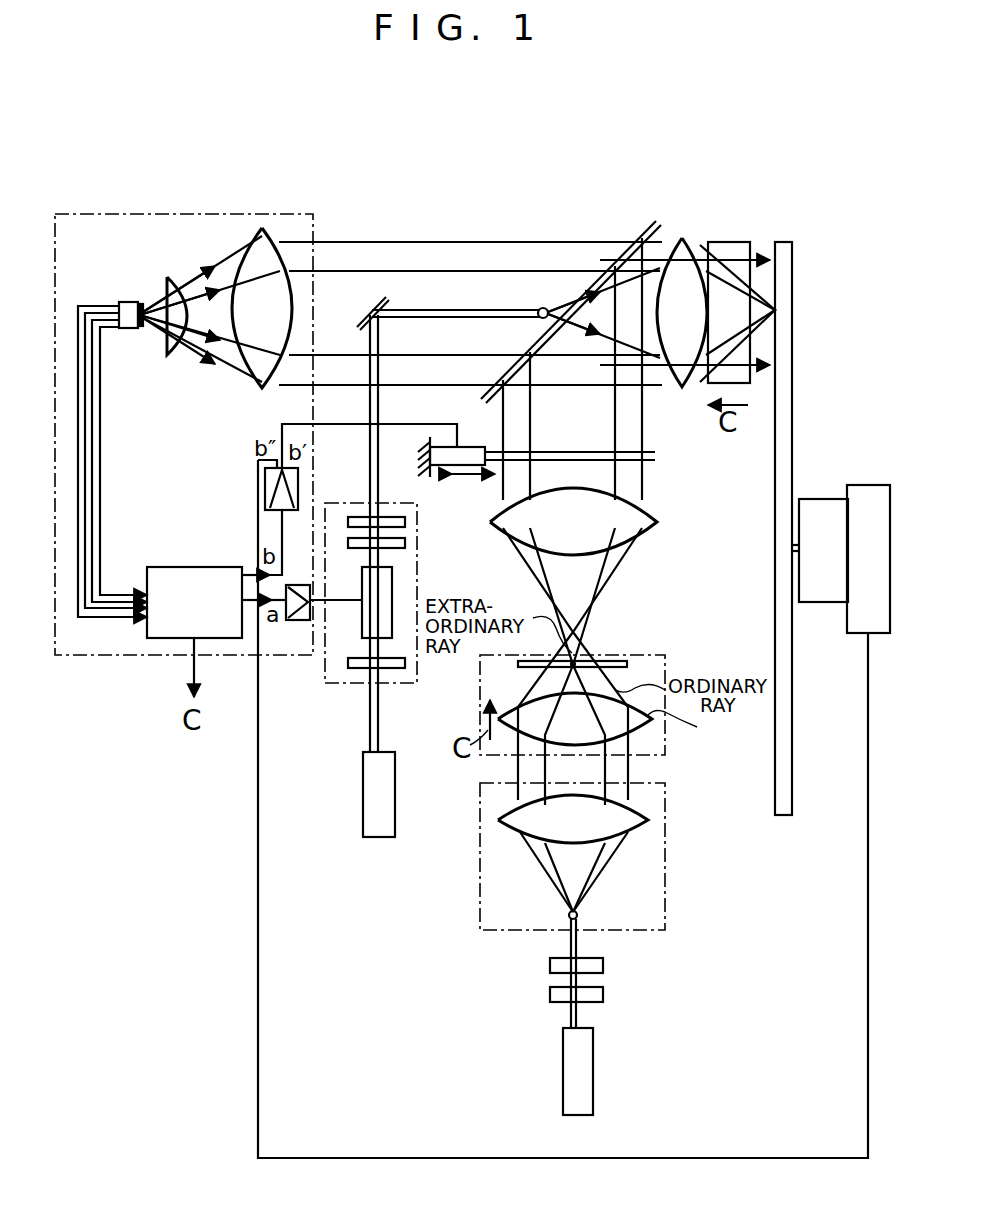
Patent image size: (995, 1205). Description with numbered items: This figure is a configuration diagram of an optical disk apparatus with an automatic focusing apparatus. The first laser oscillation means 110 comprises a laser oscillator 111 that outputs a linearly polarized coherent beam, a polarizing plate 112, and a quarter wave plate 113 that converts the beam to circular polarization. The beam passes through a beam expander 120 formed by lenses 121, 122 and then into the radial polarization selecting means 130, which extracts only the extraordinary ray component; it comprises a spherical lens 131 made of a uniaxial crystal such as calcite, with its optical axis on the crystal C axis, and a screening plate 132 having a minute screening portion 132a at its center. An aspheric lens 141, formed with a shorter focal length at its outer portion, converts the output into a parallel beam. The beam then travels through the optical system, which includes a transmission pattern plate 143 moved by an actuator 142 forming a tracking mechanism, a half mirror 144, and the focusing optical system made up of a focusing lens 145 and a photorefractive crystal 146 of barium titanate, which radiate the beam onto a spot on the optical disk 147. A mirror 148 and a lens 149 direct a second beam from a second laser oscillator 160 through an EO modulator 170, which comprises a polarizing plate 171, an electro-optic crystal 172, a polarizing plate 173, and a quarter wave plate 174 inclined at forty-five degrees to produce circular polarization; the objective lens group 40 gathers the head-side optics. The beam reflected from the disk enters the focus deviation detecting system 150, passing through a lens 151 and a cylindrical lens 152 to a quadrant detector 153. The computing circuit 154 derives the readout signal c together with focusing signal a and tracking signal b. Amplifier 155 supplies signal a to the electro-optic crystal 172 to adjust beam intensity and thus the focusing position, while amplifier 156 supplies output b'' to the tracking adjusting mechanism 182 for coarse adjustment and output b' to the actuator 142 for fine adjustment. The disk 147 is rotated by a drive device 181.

The optical head unit 40 is at (733, 461).
The first laser oscillation means 110 is at (648, 1033).
The laser oscillator 111 is at (626, 1071).
The polarizing plate 112 is at (603, 995).
The quarter wave plate 113 is at (603, 965).
The beam expander 120 is at (665, 870).
The lens 121 is at (578, 915).
The lens 122 is at (515, 830).
The radial polarization selecting means 130 is at (655, 757).
The spherical lens 131 is at (626, 731).
The screening plate 132 is at (627, 663).
The minute screening portion 132a is at (575, 660).
The aspheric lens 141 is at (657, 522).
The actuator 142 is at (476, 447).
The transmission pattern plate 143 is at (655, 456).
The half mirror 144 is at (658, 221).
The focusing lens 145 is at (682, 238).
The photorefractive crystal 146 is at (738, 242).
The optical disk 147 is at (785, 242).
The mirror 148 is at (360, 310).
The lens 149 is at (540, 310).
The focus deviation detecting system 150 is at (290, 214).
The lens 151 is at (262, 228).
The cylindrical lens 152 is at (171, 277).
The quadrant detector 153 is at (125, 301).
The computing circuit 154 is at (167, 567).
The amplifier 155 is at (297, 621).
The amplifier 156 is at (265, 482).
The second laser oscillator 160 is at (363, 818).
The EO modulator 170 is at (417, 683).
The polarizing plate 171 is at (348, 663).
The electro-optic crystal 172 is at (392, 575).
The polarizing plate 173 is at (405, 542).
The quarter wave plate 174 is at (405, 521).
The drive device 181 is at (820, 498).
The tracking adjusting mechanism 182 is at (866, 485).